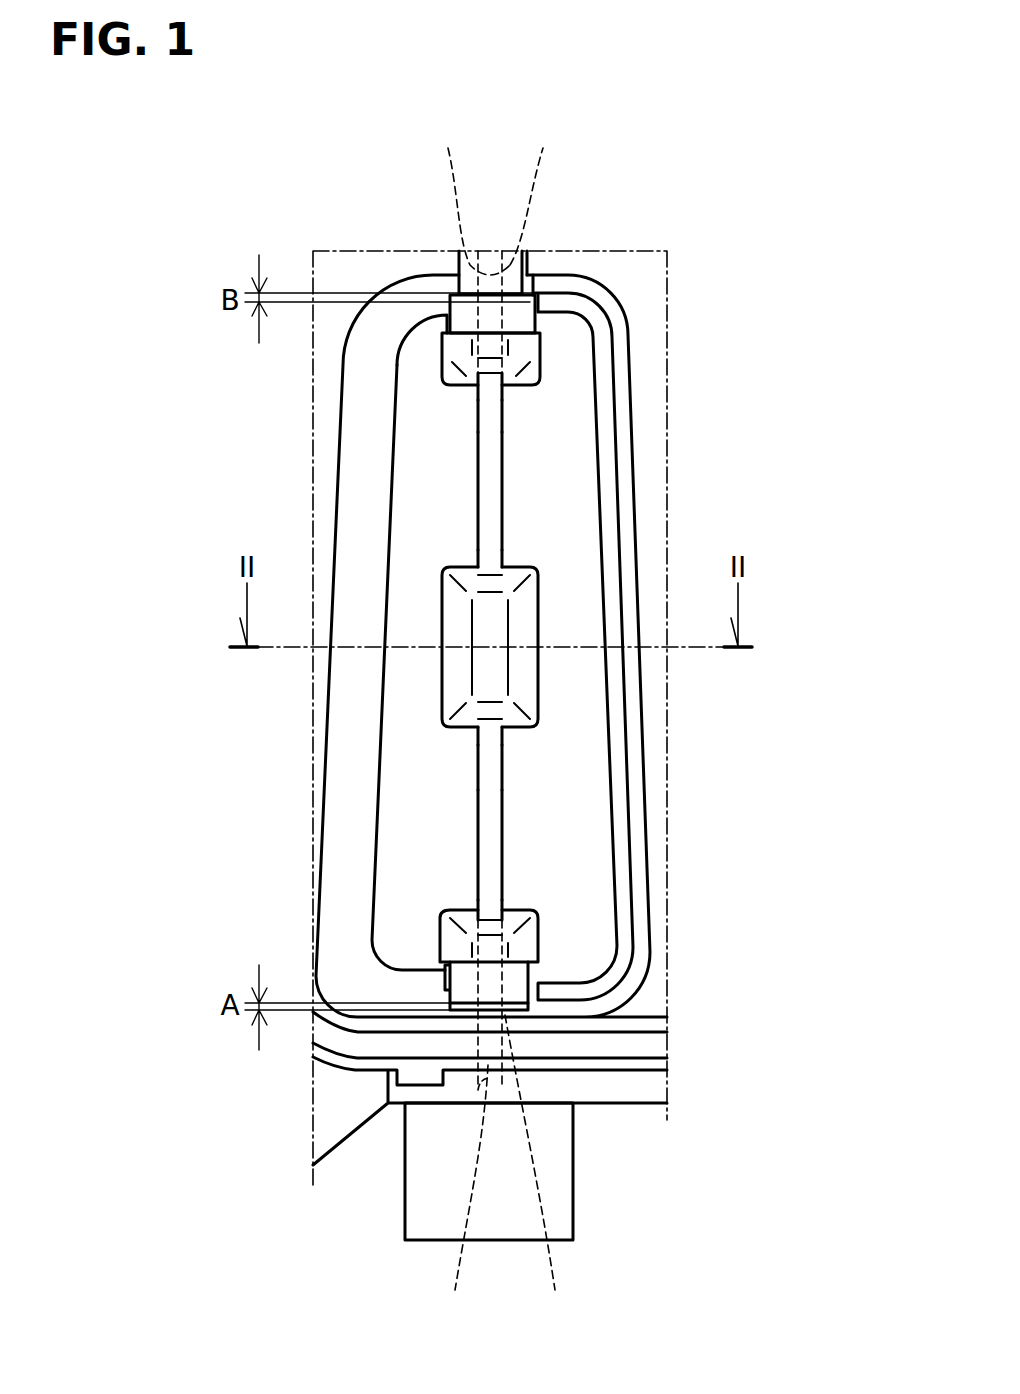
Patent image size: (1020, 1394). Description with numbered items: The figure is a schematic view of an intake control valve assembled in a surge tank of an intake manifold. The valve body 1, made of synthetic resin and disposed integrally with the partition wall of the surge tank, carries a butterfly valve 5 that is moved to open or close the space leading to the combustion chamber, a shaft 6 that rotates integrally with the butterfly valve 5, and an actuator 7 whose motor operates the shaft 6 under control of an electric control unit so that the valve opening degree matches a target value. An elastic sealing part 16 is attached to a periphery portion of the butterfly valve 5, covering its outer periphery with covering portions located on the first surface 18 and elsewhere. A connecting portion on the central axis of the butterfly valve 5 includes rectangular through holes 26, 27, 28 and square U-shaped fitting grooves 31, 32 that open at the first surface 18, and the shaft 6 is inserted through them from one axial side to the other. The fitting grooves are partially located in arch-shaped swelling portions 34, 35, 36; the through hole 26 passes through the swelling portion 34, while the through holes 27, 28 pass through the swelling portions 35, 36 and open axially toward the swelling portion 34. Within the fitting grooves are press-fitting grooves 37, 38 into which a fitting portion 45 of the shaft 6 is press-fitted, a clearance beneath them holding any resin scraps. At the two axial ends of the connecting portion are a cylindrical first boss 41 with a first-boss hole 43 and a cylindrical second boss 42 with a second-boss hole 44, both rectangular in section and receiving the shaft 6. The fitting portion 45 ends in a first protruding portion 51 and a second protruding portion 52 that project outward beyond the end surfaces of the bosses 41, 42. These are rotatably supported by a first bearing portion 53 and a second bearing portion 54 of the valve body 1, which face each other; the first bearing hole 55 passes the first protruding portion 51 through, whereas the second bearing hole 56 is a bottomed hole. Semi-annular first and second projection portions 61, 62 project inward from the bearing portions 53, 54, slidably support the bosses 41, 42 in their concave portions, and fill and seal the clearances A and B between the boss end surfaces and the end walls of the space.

The valve body 1 is at (640, 258).
The butterfly valve 5 is at (425, 470).
The shaft 6 is at (649, 489).
The fitting portion 45 is at (630, 489).
The actuator 7 is at (573, 1212).
The elastic sealing part 16 is at (342, 440).
The first surface 18 is at (405, 646).
The through hole 26 is at (478, 563).
The through hole 27 is at (478, 915).
The through hole 28 is at (481, 380).
The fitting groove 31 is at (502, 820).
The fitting groove 32 is at (478, 447).
The swelling portion 34 is at (525, 677).
The swelling portion 35 is at (528, 938).
The swelling portion 36 is at (532, 355).
The press-fitting groove 37 is at (502, 770).
The press-fitting groove 38 is at (478, 420).
The first boss 41 is at (518, 978).
The second boss 42 is at (517, 317).
The first-boss hole 43 is at (487, 1020).
The second-boss hole 44 is at (480, 312).
The first protruding portion 51 is at (539, 1167).
The second protruding portion 52 is at (470, 196).
The first bearing portion 53 is at (480, 1087).
The second bearing portion 54 is at (488, 258).
The first bearing hole 55 is at (462, 1192).
The second bearing hole 56 is at (536, 191).
The first projection portion 61 is at (463, 1013).
The second projection portion 62 is at (533, 258).